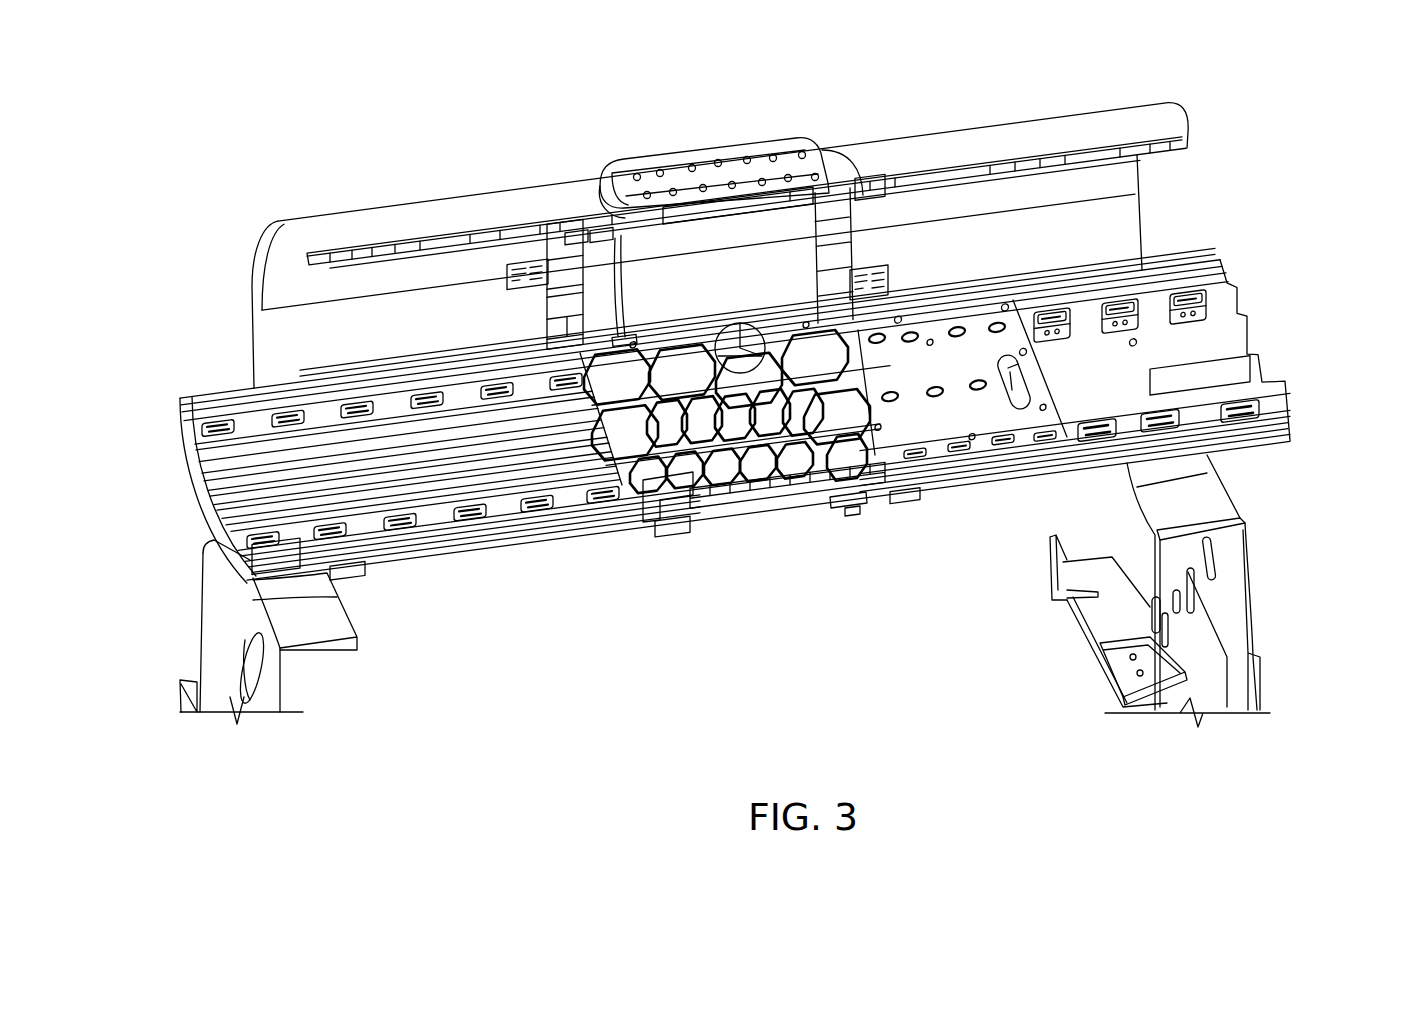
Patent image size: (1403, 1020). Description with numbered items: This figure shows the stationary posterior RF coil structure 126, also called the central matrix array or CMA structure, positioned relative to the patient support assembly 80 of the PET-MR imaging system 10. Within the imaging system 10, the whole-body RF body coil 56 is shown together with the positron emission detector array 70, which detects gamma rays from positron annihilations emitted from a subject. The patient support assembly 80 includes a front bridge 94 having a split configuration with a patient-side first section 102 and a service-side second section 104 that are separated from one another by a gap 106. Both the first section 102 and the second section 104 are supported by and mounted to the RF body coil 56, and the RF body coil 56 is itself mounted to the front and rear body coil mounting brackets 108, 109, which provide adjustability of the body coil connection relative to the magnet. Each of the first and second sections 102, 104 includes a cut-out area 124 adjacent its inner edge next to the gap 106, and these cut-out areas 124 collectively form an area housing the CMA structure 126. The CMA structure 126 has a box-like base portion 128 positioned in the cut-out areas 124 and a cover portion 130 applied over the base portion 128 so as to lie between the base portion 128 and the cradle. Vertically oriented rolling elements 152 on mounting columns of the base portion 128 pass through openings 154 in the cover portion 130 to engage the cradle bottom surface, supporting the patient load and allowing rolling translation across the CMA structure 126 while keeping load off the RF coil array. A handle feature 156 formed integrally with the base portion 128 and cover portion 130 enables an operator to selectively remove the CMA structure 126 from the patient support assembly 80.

The PET-MR imaging system 10 is at (535, 128).
The RF body coil 56 is at (332, 223).
The positron emission detector array 70 is at (750, 142).
The patient support assembly 80 is at (1246, 270).
The front bridge 94 is at (556, 636).
The first section 102 is at (1262, 446).
The second section 104 is at (543, 547).
The gap 106 is at (737, 544).
The front body coil mounting bracket 108 is at (1250, 591).
The rear body coil mounting bracket 109 is at (290, 677).
The cut-out area 124 is at (636, 550).
The stationary posterior RF coil structure 126 is at (810, 452).
The base portion 128 is at (764, 502).
The cover portion 130 is at (771, 370).
The rolling element 152 is at (895, 402).
The openings 154 is at (681, 437).
The handle feature 156 is at (1008, 356).